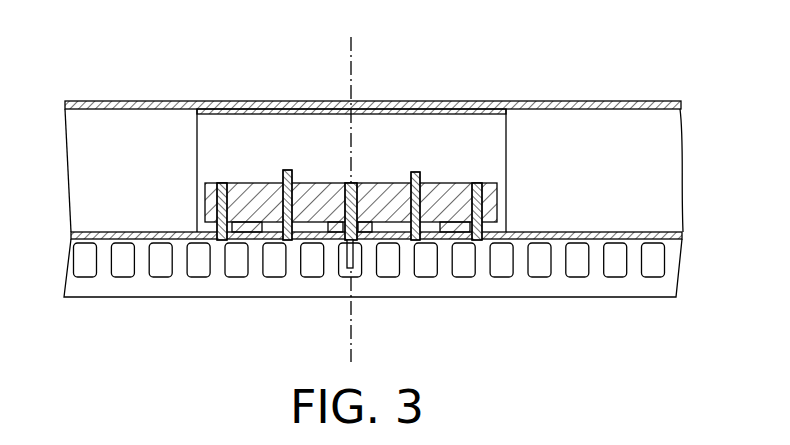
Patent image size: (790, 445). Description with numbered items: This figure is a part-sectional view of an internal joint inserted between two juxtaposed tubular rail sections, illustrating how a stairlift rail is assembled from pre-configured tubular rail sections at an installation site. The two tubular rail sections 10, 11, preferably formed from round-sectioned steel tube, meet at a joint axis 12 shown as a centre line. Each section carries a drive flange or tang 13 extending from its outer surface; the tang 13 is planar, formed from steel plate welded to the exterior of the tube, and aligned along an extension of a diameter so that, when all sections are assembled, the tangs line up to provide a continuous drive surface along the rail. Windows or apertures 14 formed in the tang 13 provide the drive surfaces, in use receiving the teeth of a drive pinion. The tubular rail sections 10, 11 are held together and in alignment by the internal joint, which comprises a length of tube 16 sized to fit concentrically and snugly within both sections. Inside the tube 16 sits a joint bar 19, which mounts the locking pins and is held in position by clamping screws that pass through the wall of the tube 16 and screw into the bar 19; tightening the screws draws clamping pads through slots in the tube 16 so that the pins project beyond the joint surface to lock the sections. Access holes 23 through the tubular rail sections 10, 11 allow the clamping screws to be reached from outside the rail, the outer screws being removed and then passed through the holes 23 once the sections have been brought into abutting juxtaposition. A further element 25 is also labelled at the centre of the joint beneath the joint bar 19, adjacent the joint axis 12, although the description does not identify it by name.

The tubular rail section 10 is at (124, 101).
The tubular rail section 11 is at (578, 101).
The joint axis 12 is at (351, 45).
The drive flange or tang 13 is at (143, 282).
The windows or apertures 14 is at (660, 256).
The tube 16 is at (404, 110).
The joint bar 19 is at (448, 196).
The access holes 23 is at (229, 242).
The central contact pin 25 is at (343, 290).